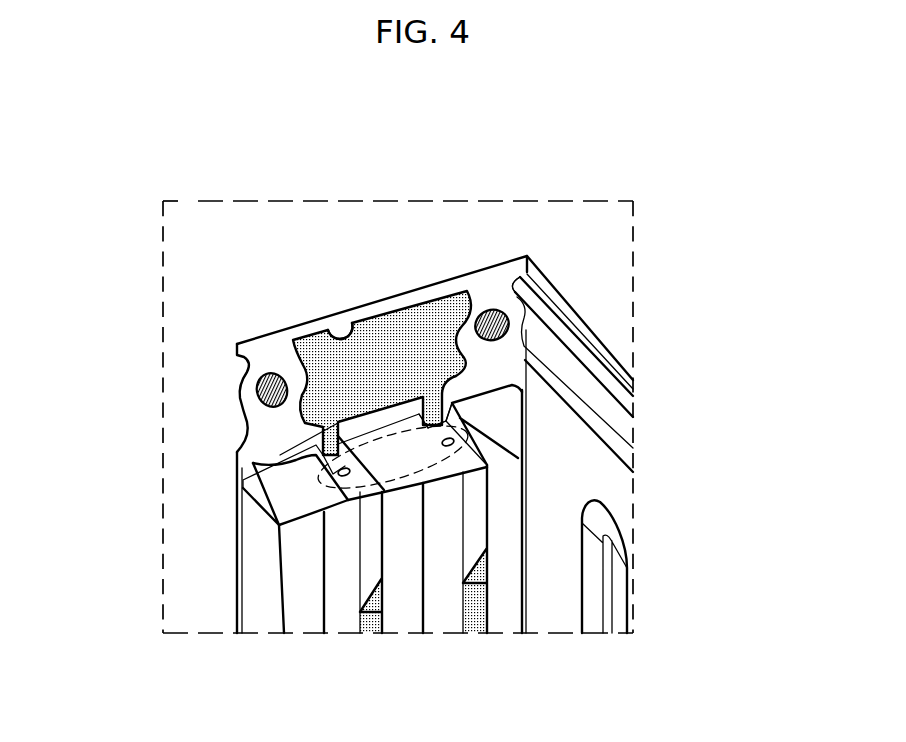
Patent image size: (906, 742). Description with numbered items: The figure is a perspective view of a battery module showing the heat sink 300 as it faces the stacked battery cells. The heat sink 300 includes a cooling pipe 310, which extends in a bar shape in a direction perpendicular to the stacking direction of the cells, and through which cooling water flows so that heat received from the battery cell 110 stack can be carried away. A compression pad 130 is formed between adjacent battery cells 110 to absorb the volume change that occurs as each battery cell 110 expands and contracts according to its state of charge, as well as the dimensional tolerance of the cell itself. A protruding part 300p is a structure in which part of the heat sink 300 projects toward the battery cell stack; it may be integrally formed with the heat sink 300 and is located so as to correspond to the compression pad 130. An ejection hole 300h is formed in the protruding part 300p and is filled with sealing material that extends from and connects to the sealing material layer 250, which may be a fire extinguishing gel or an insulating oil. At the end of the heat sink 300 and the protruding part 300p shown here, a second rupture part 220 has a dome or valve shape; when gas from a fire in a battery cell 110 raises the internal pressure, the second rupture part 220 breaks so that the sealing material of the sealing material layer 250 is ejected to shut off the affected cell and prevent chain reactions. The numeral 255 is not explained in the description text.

The battery cell 110 is at (405, 636).
The compression pad 130 is at (367, 636).
The second rupture part 220 is at (264, 514).
The sealing material layer 250 is at (410, 337).
The notch 255 is at (325, 337).
The heat sink 300 is at (492, 287).
The ejection hole 300h is at (462, 370).
The protruding part 300p is at (253, 463).
The cooling pipe 310 is at (268, 391).